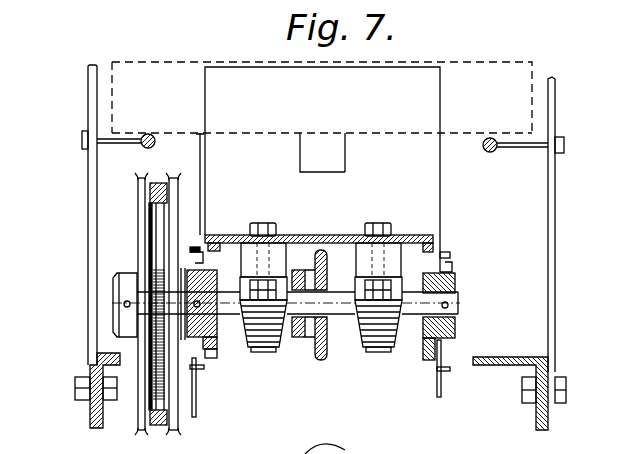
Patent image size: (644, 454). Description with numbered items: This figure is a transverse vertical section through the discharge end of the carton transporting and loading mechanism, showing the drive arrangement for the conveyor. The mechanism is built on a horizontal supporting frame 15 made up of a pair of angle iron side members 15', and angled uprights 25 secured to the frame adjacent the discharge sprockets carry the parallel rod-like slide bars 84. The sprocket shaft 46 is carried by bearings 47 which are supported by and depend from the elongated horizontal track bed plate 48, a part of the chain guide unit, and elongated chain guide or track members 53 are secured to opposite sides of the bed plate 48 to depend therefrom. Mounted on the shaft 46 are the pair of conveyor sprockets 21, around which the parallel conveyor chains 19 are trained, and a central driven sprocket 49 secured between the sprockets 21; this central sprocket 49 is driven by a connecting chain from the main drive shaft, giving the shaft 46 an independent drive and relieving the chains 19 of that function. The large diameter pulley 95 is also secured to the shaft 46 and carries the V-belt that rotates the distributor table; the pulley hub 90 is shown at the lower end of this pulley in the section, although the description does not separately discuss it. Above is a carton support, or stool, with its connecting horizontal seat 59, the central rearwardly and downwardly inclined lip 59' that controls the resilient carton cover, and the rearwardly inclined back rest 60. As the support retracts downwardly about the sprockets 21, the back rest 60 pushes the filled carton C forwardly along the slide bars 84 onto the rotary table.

The filled carton C is at (536, 77).
The back rest 60 is at (428, 112).
The horizontal seat 59 is at (295, 154).
The lip 59' is at (369, 153).
The angled uprights 25 is at (88, 262).
The slide bars 84 is at (154, 146).
The supporting frame 15 is at (77, 391).
The angle iron side members 15' is at (519, 396).
The large diameter pulley 95 is at (138, 228).
The pulley hub 90 is at (156, 423).
The track bed plate 48 is at (347, 243).
The chain guide members 53 is at (190, 250).
The sprocket shaft 46 is at (342, 312).
The bearings 47 is at (264, 348).
The central driven sprocket 49 is at (315, 343).
The conveyor chains 19 is at (217, 352).
The conveyor sprockets 21 is at (193, 372).